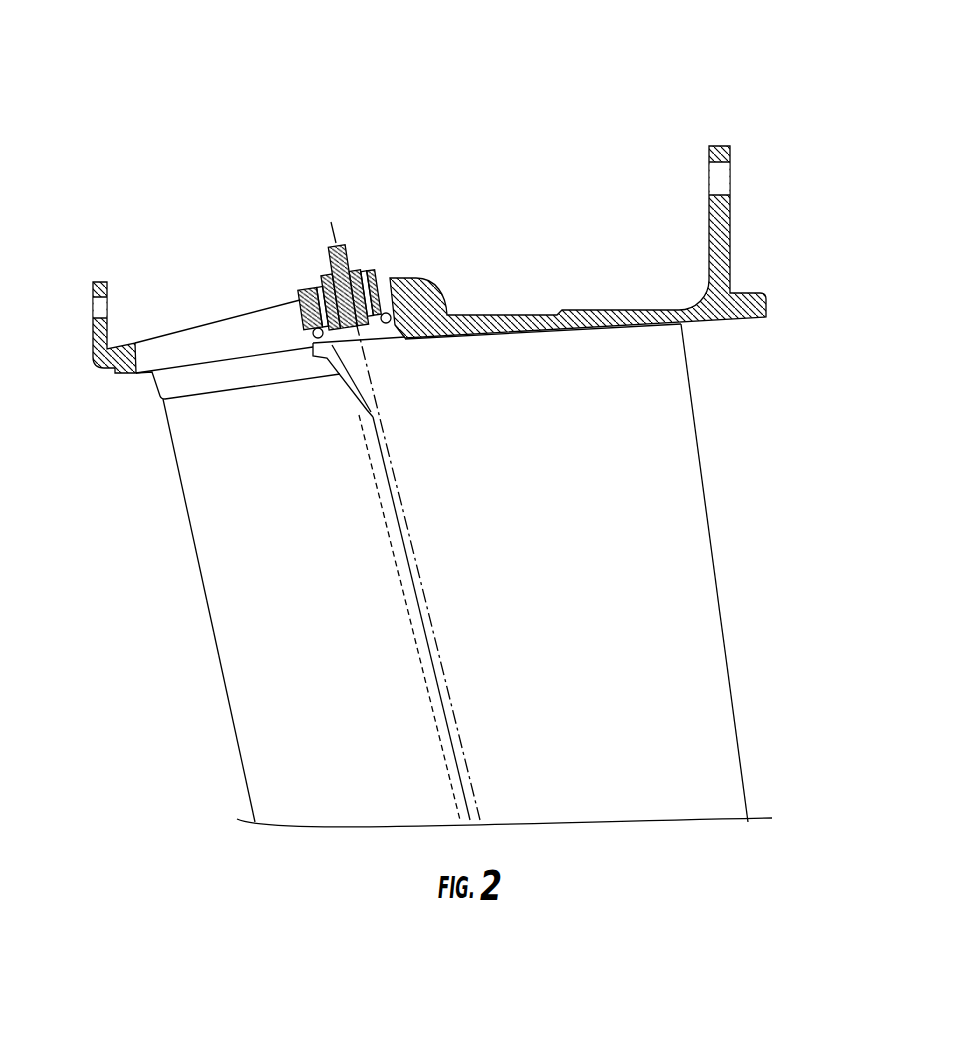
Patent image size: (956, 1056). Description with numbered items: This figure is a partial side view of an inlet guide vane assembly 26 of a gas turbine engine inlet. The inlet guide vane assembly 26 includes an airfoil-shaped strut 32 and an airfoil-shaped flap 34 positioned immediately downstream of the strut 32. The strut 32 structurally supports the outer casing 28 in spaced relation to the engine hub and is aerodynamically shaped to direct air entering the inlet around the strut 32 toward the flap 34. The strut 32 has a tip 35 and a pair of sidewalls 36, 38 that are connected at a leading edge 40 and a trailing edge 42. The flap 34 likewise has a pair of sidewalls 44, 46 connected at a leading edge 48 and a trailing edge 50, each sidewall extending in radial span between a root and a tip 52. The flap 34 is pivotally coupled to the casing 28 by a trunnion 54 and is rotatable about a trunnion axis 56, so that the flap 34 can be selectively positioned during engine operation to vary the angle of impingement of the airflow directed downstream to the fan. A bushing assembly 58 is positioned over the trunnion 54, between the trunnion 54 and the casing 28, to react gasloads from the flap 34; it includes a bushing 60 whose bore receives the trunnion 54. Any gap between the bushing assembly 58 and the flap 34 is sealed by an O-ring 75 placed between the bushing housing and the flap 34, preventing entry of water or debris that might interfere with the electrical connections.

The inlet guide vane assembly 26 is at (562, 67).
The casing 28 is at (735, 237).
The strut 32 is at (214, 600).
The flap 34 is at (678, 525).
The tip 35 is at (192, 383).
The sidewall 36 is at (234, 692).
The sidewall 38 is at (233, 652).
The leading edge 40 is at (213, 630).
The trailing edge 42 is at (432, 647).
The sidewall 44 is at (713, 687).
The sidewall 46 is at (713, 640).
The leading edge 48 is at (383, 487).
The trailing edge 50 is at (720, 589).
The tip 52 is at (580, 323).
The trunnion 54 is at (354, 238).
The trunnion axis 56 is at (380, 404).
The bushing assembly 58 is at (297, 283).
The bushing 60 is at (380, 271).
The O-ring 75 is at (389, 312).